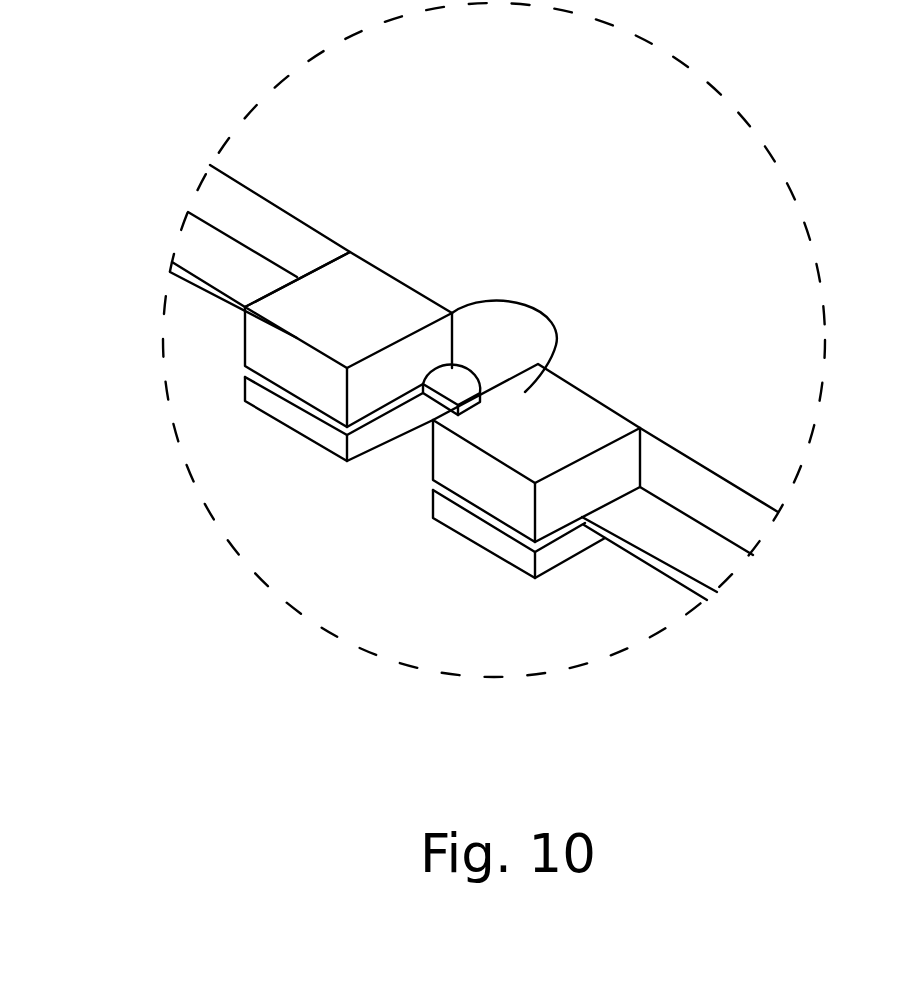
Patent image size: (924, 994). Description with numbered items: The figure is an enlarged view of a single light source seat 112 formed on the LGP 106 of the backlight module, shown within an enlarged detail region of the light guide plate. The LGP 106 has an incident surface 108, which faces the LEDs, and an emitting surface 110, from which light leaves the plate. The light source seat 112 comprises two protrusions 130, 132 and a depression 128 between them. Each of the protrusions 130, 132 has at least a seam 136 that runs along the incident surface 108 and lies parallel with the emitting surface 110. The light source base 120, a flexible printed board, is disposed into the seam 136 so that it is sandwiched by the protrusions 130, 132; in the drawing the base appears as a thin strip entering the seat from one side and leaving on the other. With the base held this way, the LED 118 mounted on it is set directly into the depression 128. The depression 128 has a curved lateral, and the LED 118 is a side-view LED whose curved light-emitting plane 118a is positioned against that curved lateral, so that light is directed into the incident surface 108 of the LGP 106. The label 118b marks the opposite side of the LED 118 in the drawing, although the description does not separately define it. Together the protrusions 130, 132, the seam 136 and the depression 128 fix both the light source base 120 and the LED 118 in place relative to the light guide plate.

The LGP 106 is at (783, 257).
The incident surface 108 is at (680, 477).
The emitting surface 110 is at (688, 163).
The light source seat 112 is at (412, 200).
The LED 118 is at (479, 369).
The curved light-emitting plane 118a is at (485, 377).
The second contact pad 118b is at (438, 393).
The light source base 120 is at (644, 538).
The depression 128 is at (535, 309).
The protrusion 130 is at (245, 353).
The protrusion 132 is at (433, 503).
The seam 136 is at (483, 521).